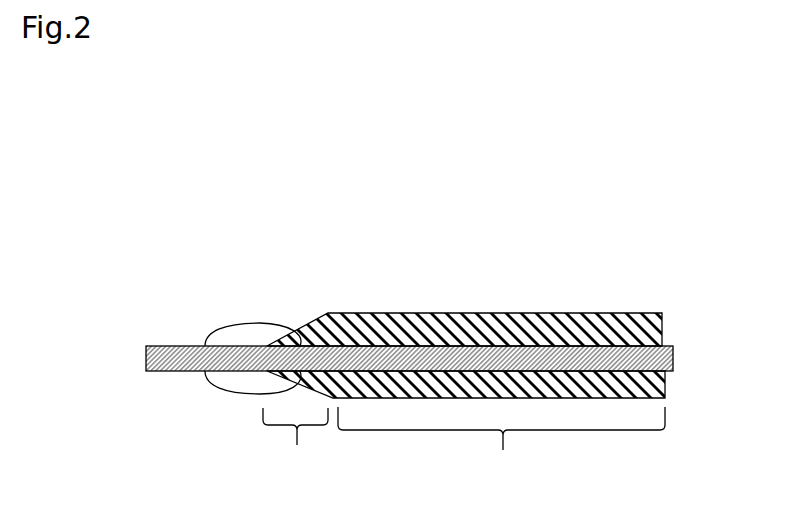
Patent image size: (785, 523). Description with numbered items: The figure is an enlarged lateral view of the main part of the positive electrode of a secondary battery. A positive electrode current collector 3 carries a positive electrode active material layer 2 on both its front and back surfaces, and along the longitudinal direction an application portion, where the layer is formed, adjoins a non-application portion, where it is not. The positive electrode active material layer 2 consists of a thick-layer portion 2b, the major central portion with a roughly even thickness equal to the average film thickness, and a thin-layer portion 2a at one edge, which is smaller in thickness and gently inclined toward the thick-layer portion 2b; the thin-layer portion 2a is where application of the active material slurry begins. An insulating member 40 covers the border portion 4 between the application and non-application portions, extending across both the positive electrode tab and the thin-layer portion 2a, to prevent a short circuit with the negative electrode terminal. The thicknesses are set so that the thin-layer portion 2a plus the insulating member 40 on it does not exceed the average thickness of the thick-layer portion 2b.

The positive electrode active material layer 2 is at (660, 318).
The thin-layer portion 2a is at (295, 450).
The thick-layer portion 2b is at (501, 452).
The positive electrode current collector 3 is at (186, 357).
The border portion 4 is at (231, 369).
The insulating member 40 is at (225, 337).